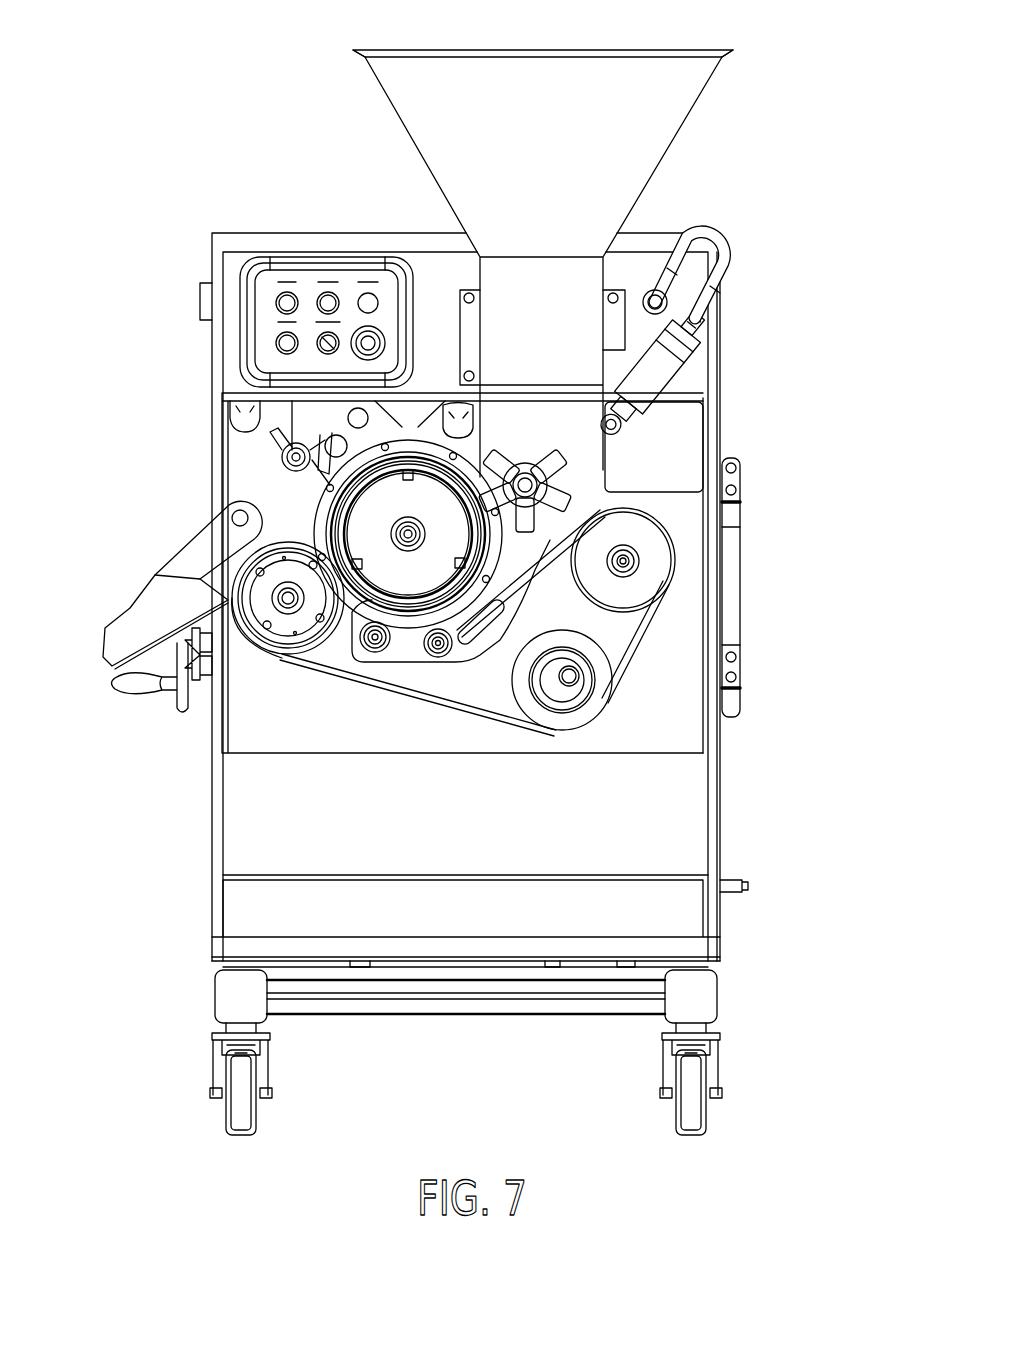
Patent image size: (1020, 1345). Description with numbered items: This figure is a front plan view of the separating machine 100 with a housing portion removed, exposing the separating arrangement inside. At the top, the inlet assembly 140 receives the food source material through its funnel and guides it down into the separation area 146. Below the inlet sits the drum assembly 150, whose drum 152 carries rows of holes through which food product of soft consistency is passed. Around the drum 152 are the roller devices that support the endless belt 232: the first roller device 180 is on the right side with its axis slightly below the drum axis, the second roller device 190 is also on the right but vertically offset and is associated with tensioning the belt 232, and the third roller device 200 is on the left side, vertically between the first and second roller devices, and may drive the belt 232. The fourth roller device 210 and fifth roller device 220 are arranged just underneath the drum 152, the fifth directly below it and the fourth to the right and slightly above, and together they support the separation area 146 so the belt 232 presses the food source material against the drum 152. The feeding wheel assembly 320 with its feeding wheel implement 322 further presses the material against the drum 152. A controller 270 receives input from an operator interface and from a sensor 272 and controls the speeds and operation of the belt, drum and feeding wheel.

The separating machine 100 is at (158, 70).
The inlet assembly 140 is at (398, 150).
The separation area 146 is at (518, 548).
The drum assembly 150 is at (298, 506).
The drum 152 is at (355, 600).
The first roller device 180 is at (644, 582).
The second roller device 190 is at (593, 702).
The third roller device 200 is at (283, 627).
The fourth roller device 210 is at (375, 656).
The fifth roller device 220 is at (440, 668).
The endless belt 232 is at (560, 742).
The controller 270 is at (262, 288).
The sensor 272 is at (660, 362).
The feeding wheel assembly 320 is at (529, 448).
The feeding wheel implement 322 is at (553, 462).